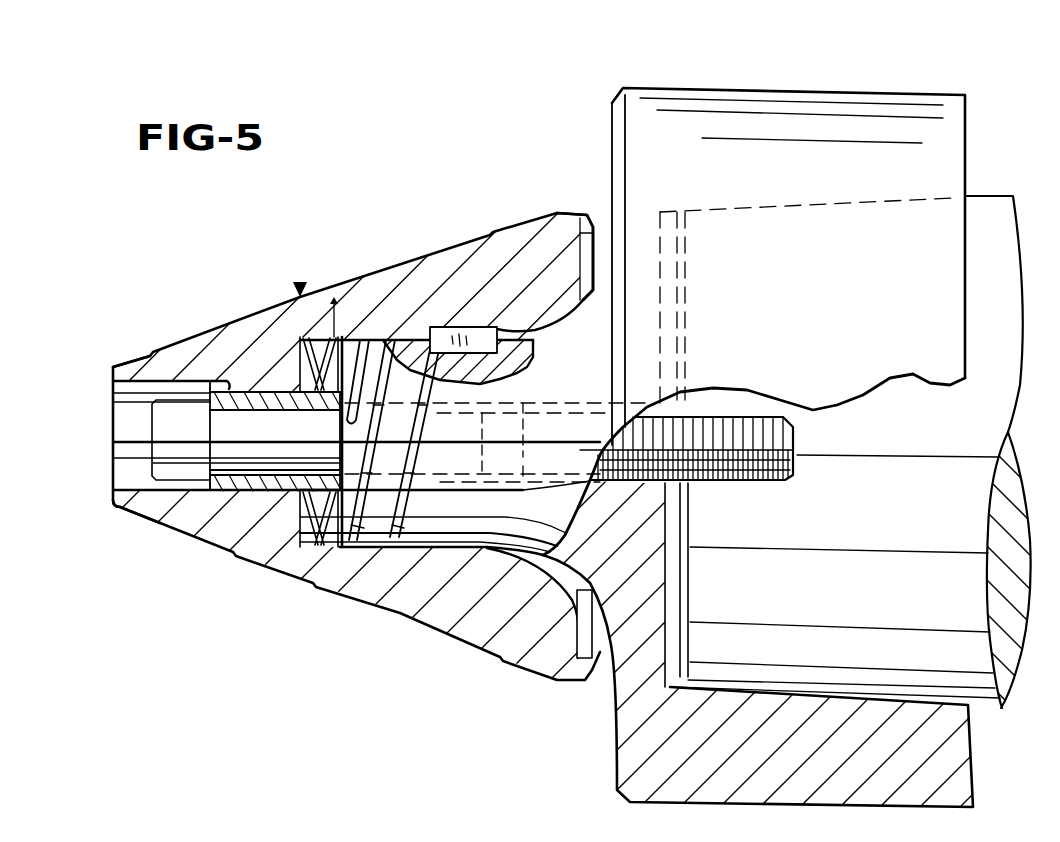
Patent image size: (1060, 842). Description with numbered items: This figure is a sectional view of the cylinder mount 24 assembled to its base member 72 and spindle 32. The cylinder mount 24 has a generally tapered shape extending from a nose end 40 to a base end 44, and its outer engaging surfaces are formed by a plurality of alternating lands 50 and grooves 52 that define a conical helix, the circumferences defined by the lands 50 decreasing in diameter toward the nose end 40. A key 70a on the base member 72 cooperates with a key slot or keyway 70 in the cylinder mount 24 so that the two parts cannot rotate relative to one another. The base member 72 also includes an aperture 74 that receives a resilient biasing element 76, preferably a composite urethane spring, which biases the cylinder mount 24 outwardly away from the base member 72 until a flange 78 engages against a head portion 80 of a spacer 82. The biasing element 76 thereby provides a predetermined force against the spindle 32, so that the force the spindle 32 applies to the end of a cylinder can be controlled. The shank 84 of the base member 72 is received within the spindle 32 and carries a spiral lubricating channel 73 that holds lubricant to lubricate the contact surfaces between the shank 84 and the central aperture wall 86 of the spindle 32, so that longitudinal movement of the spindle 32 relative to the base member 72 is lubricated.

The cylinder mount 24 is at (200, 545).
The spindle 32 is at (372, 622).
The nose end 40 is at (125, 360).
The base end 44 is at (575, 210).
The land 50 is at (222, 327).
The groove 52 is at (300, 284).
The key slot or keyway 70 is at (427, 347).
The key 70a is at (480, 343).
The base member 72 is at (752, 88).
The spiral lubricating channel 73 is at (393, 525).
The aperture 74 is at (300, 355).
The resilient biasing element 76 is at (313, 539).
The flange 78 is at (260, 493).
The head portion 80 is at (113, 398).
The spacer 82 is at (180, 503).
The shank 84 is at (468, 523).
The central aperture wall 86 is at (346, 296).